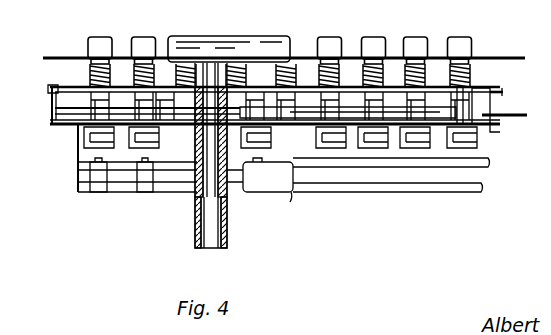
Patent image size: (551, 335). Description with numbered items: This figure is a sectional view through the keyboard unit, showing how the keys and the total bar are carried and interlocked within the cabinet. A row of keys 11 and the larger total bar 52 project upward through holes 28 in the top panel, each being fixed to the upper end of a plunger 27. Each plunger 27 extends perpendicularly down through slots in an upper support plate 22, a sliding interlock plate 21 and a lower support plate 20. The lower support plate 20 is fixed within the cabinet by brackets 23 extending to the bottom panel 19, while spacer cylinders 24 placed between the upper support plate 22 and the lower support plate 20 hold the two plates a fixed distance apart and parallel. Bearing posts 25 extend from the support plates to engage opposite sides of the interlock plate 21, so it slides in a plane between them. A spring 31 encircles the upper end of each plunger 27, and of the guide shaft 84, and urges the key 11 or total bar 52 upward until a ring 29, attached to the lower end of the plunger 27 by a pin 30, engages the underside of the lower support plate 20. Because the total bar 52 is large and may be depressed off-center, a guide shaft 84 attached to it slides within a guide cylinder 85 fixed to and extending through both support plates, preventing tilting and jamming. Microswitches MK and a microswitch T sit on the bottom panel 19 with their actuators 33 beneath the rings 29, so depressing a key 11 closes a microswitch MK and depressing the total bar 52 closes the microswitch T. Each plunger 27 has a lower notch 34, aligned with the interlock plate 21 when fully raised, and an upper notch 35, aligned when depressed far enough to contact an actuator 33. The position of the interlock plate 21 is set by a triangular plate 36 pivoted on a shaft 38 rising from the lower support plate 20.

The key 11 is at (364, 35).
The bottom panel 19 is at (372, 192).
The lower support plate 20 is at (500, 127).
The interlock plate 21 is at (55, 105).
The upper support plate 22 is at (53, 89).
The bracket 23 is at (74, 172).
The spacer cylinder 24 is at (478, 127).
The bearing post 25 is at (160, 97).
The plunger 27 is at (316, 114).
The hole 28 is at (89, 56).
The ring 29 is at (80, 142).
The pin 30 is at (485, 158).
The spring 31 is at (90, 76).
The actuator 33 is at (246, 162).
The lower notch 34 is at (105, 117).
The upper notch 35 is at (102, 96).
The triangular plate 36 is at (503, 114).
The shaft 38 is at (500, 93).
The total bar 52 is at (257, 42).
The guide shaft 84 is at (224, 190).
The guide cylinder 85 is at (229, 222).
The microswitch MK is at (110, 203).
The microswitch T is at (290, 202).